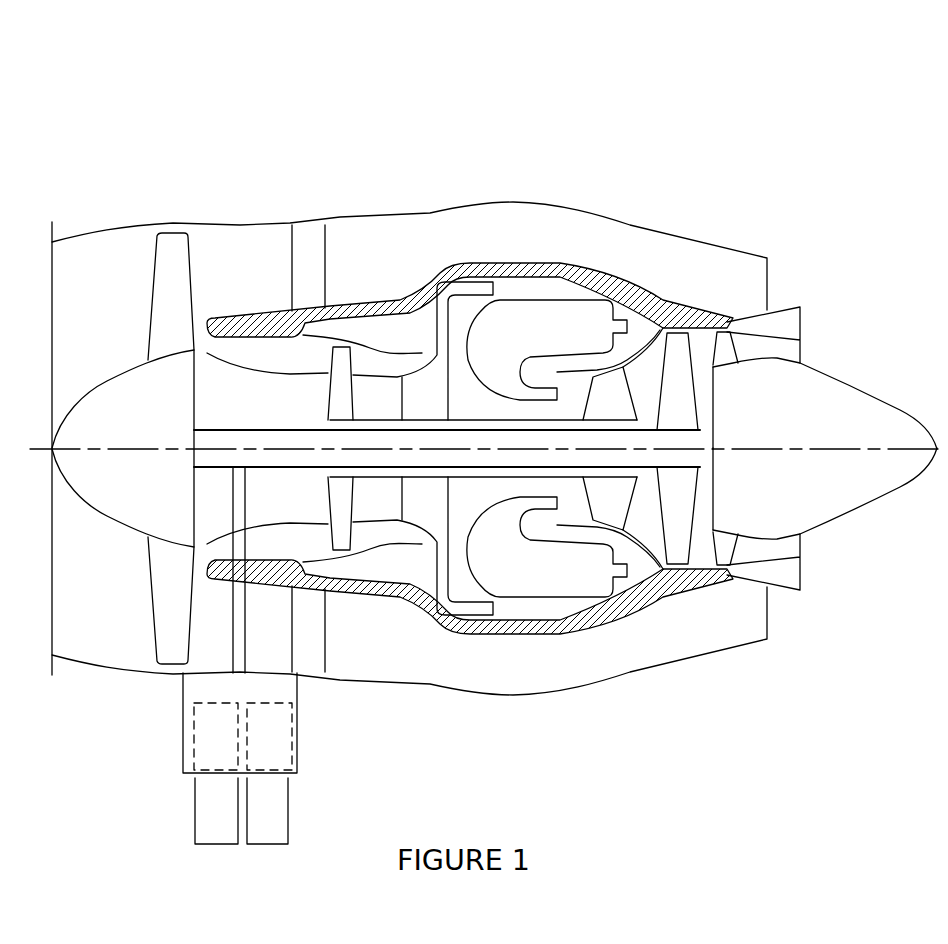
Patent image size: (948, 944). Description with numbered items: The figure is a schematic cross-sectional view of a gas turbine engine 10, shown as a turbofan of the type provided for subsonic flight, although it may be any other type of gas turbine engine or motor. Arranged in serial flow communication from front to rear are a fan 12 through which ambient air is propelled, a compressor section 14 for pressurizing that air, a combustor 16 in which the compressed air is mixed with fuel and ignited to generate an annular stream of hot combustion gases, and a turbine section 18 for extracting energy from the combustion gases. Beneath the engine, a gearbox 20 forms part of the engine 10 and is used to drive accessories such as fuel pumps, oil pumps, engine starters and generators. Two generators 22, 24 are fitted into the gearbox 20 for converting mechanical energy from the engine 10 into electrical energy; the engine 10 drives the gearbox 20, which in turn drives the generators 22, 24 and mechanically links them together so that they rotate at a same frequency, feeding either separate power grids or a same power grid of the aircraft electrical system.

The gas turbine engine 10 is at (485, 406).
The fan 12 is at (165, 590).
The compressor section 14 is at (387, 363).
The combustor 16 is at (540, 320).
The turbine section 18 is at (645, 527).
The gearbox 20 is at (184, 730).
The generator 22 is at (292, 805).
The generator 24 is at (195, 803).